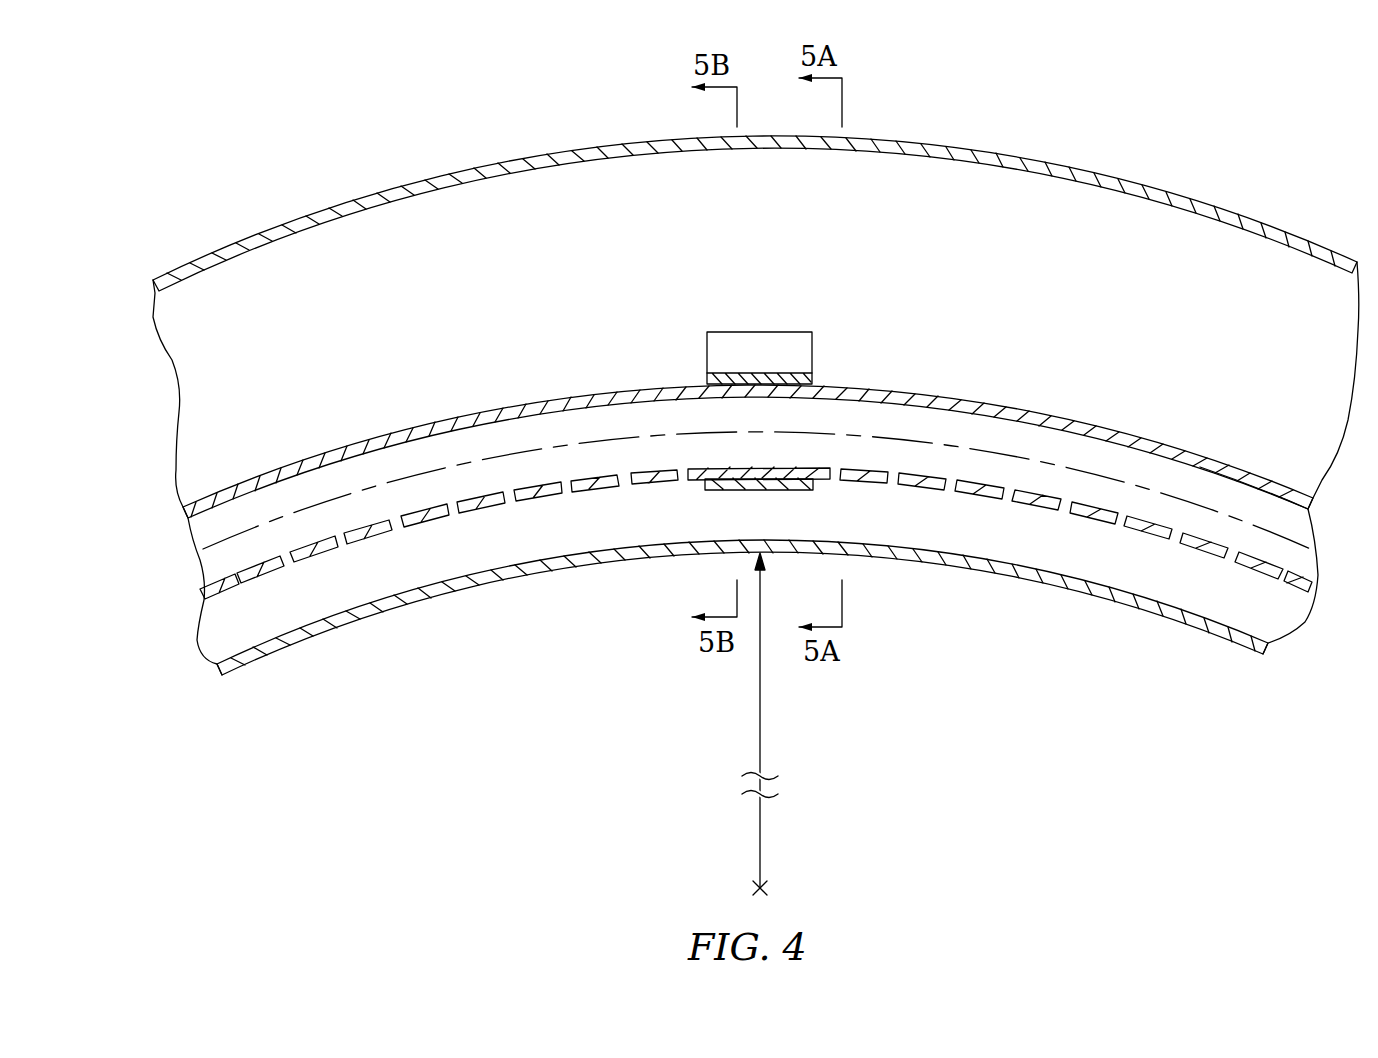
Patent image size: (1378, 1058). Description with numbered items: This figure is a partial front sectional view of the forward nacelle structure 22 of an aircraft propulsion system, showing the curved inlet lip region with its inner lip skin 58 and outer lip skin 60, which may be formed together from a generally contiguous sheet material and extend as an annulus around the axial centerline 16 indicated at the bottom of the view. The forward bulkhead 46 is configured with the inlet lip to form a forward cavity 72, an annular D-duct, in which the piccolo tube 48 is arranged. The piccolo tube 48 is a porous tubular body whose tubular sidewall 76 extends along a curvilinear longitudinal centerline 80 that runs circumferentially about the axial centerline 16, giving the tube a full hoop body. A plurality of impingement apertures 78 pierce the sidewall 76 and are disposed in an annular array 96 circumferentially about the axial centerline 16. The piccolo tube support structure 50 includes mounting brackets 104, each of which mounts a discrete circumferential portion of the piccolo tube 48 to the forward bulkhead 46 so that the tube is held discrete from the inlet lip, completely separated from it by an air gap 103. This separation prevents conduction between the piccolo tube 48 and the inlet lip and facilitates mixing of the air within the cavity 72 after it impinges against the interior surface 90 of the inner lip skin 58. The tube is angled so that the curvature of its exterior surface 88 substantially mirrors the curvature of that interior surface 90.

The axial centerline 16 is at (766, 886).
The turbine section 22 is at (1295, 152).
The forward bulkhead 46 is at (178, 411).
The piccolo tube 48 is at (1144, 426).
The piccolo tube support structure 50 is at (813, 324).
The inner lip skin 58 is at (1051, 610).
The outer lip skin 60 is at (1166, 178).
The forward cavity 72 is at (622, 271).
The tubular sidewall 76 is at (1263, 477).
The apertures 78 is at (455, 509).
The longitudinal centerline 80 is at (555, 440).
The exterior surface 88 is at (653, 479).
The interior surface 90 is at (622, 548).
The arrays 96 is at (230, 615).
The gap 103 is at (866, 530).
The mounting brackets 104 is at (815, 358).